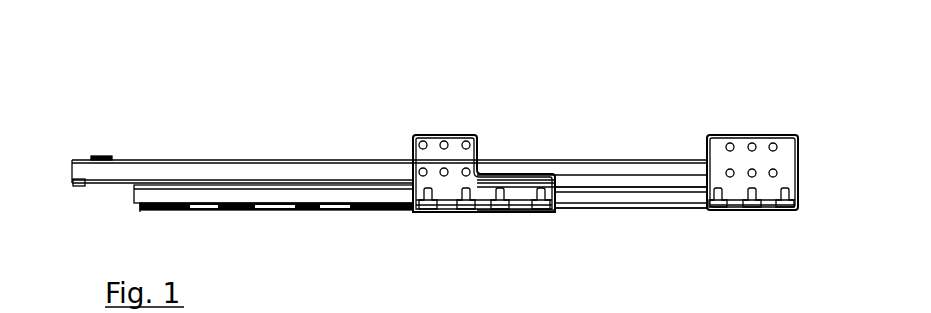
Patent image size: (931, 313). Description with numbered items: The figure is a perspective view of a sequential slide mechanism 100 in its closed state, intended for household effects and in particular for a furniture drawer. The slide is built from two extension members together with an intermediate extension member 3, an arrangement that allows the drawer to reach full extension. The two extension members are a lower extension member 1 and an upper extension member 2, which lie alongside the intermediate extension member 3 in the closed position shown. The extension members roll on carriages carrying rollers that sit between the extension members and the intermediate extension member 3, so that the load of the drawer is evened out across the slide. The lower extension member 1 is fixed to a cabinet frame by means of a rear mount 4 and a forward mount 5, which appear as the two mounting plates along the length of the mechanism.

The sequential slide mechanism 100 is at (82, 112).
The lower extension member 1 is at (342, 205).
The upper extension member 2 is at (678, 158).
The intermediate extension member 3 is at (372, 185).
The rear mount 4 is at (447, 135).
The forward mount 5 is at (752, 135).